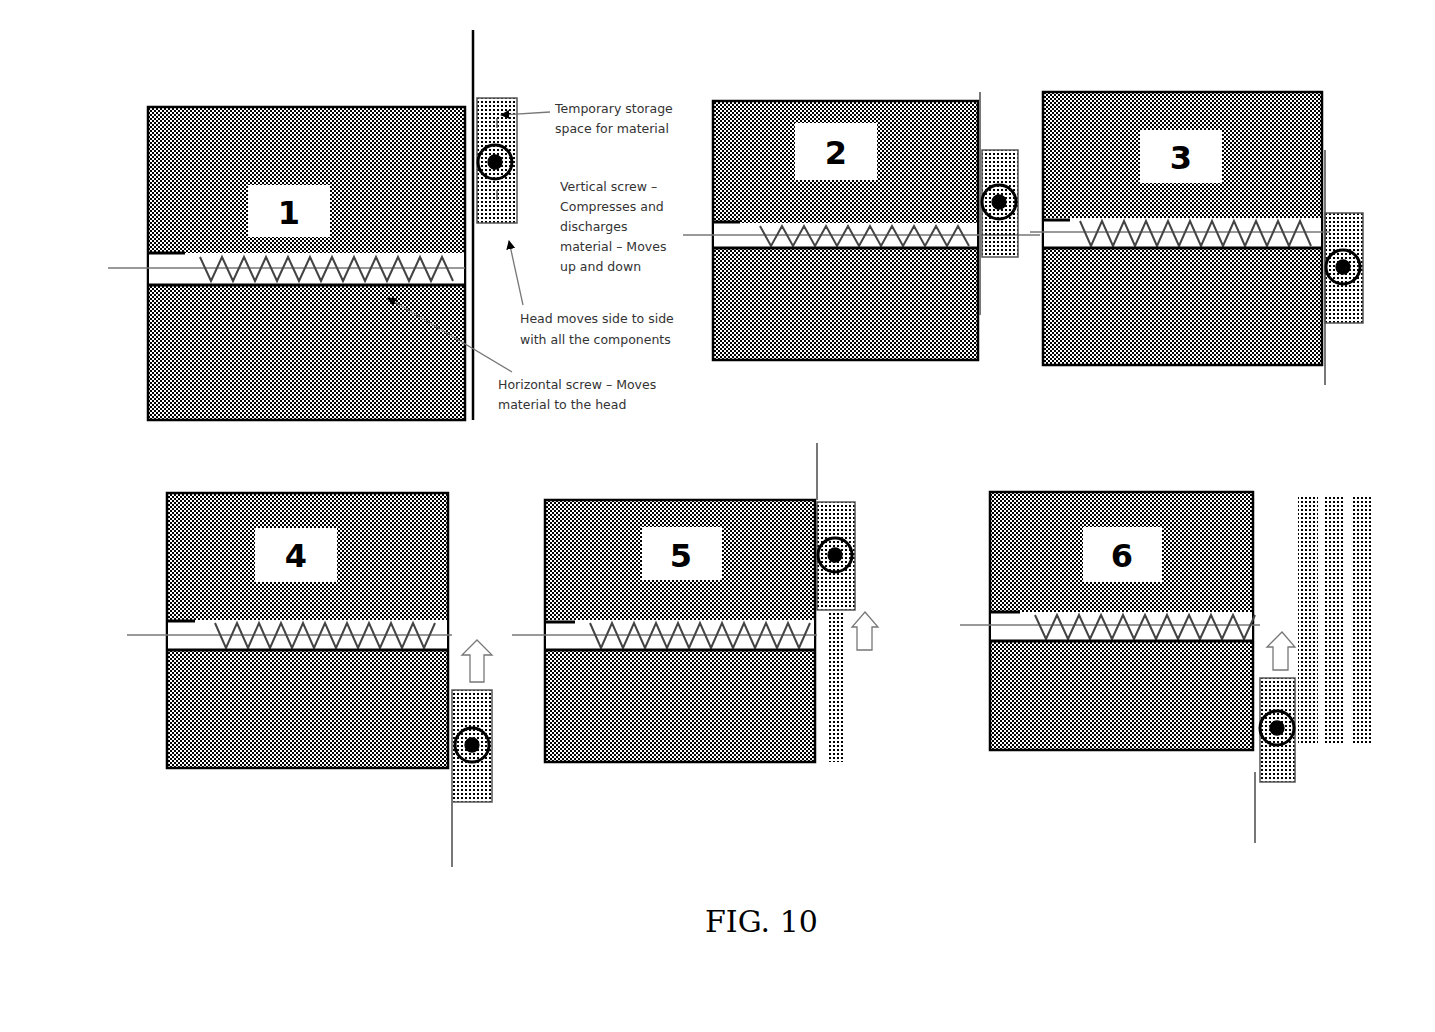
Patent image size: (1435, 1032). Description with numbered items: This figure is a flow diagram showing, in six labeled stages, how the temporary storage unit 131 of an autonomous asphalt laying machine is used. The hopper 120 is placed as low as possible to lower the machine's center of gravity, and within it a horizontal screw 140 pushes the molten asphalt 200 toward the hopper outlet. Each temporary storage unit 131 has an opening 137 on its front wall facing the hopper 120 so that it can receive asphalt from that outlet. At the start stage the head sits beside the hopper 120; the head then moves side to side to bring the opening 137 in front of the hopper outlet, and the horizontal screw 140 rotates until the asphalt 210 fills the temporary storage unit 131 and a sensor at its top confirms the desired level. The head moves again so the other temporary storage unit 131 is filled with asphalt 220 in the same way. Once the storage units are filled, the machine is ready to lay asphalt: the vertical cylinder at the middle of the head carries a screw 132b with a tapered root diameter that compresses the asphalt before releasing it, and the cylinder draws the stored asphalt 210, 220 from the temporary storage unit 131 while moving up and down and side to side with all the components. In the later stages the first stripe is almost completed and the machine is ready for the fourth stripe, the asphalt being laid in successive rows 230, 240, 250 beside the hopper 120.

The hopper 120 is at (199, 99).
The horizontal screw 140 is at (356, 246).
The opening 137 is at (469, 116).
The temporary storage unit 131 is at (501, 92).
The screw 132b is at (513, 167).
The asphalt 200 is at (199, 254).
The asphalt filled in the temporary storage unit 210 is at (997, 263).
The asphalt in the other temporary storage unit 220 is at (1363, 209).
The row 230 is at (850, 725).
The row 240 is at (1333, 750).
The row 250 is at (1307, 490).